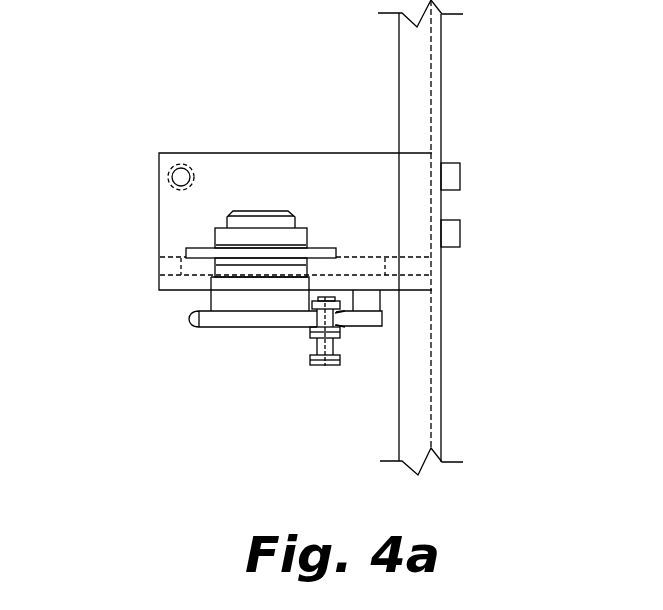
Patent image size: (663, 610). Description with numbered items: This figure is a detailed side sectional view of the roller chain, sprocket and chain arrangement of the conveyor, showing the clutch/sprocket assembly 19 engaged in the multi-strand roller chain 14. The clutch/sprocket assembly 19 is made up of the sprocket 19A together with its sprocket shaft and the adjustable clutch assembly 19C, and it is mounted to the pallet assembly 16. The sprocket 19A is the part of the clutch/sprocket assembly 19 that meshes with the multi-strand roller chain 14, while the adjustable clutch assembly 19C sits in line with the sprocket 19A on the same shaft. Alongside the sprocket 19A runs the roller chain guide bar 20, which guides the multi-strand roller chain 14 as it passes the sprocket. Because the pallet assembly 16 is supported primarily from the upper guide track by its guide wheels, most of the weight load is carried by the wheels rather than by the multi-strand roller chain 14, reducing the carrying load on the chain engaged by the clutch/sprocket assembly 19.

The pallet assembly 16 is at (442, 82).
The clutch/sprocket assembly 19 is at (215, 240).
The adjustable clutch assembly 19C is at (323, 247).
The sprocket 19A is at (189, 319).
The roller chain guide bar 20 is at (387, 320).
The multi-strand roller chain 14 is at (323, 370).